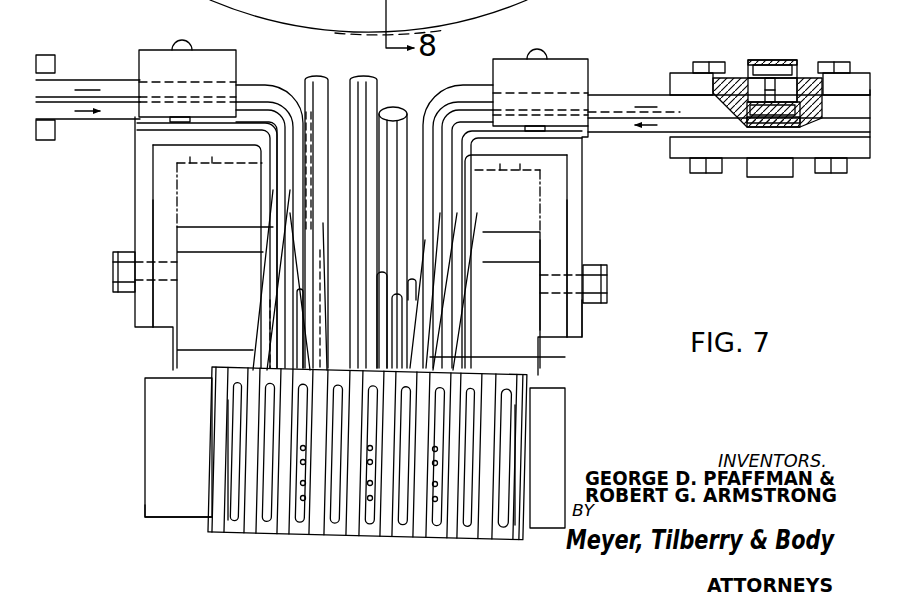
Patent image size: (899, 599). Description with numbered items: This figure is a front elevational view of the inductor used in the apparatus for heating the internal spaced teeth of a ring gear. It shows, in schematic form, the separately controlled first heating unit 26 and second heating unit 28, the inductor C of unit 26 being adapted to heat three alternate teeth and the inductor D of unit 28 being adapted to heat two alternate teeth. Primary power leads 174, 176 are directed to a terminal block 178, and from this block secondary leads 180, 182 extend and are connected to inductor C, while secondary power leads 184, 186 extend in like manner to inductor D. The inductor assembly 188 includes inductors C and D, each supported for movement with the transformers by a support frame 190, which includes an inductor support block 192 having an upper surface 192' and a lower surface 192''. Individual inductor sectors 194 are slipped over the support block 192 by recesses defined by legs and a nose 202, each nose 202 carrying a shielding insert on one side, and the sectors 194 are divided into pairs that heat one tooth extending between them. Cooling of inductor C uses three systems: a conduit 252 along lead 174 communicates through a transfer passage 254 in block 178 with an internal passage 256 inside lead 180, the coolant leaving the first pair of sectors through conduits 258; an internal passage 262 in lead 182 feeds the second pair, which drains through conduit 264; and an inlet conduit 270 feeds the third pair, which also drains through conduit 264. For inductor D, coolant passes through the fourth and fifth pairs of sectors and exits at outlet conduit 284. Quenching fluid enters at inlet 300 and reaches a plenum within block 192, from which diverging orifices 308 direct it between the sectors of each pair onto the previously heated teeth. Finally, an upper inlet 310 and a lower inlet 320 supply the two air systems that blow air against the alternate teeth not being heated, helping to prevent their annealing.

The first heating unit 26 is at (808, 42).
The second heating unit 28 is at (50, 40).
The primary power lead 174 is at (670, 78).
The primary power lead 176 is at (729, 162).
The terminal block 178 is at (690, 73).
The secondary lead 180 is at (463, 100).
The secondary lead 182 is at (468, 188).
The secondary power lead 184 is at (306, 160).
The secondary power lead 186 is at (278, 190).
The inductor assembly 188 is at (522, 312).
The support frame 190 is at (530, 268).
The inductor support block 192 is at (563, 438).
The upper surface 192' is at (150, 432).
The lower surface 192'' is at (148, 533).
The inductor sector 194 is at (252, 523).
The nose 202 is at (255, 472).
The conduit 252 is at (770, 60).
The transfer passage 254 is at (752, 88).
The internal passage 256 is at (805, 80).
The conduit 258 is at (433, 280).
The internal passage 262 is at (773, 128).
The conduit 264 is at (393, 310).
The inlet conduit 270 is at (400, 296).
The outlet conduit 284 is at (282, 340).
The quenching fluid inlet 300 is at (410, 115).
The orifices 308 is at (373, 448).
The upper inlet 310 is at (352, 80).
The inlet 320 is at (318, 80).
The inductor C is at (505, 457).
The inductor D is at (237, 432).